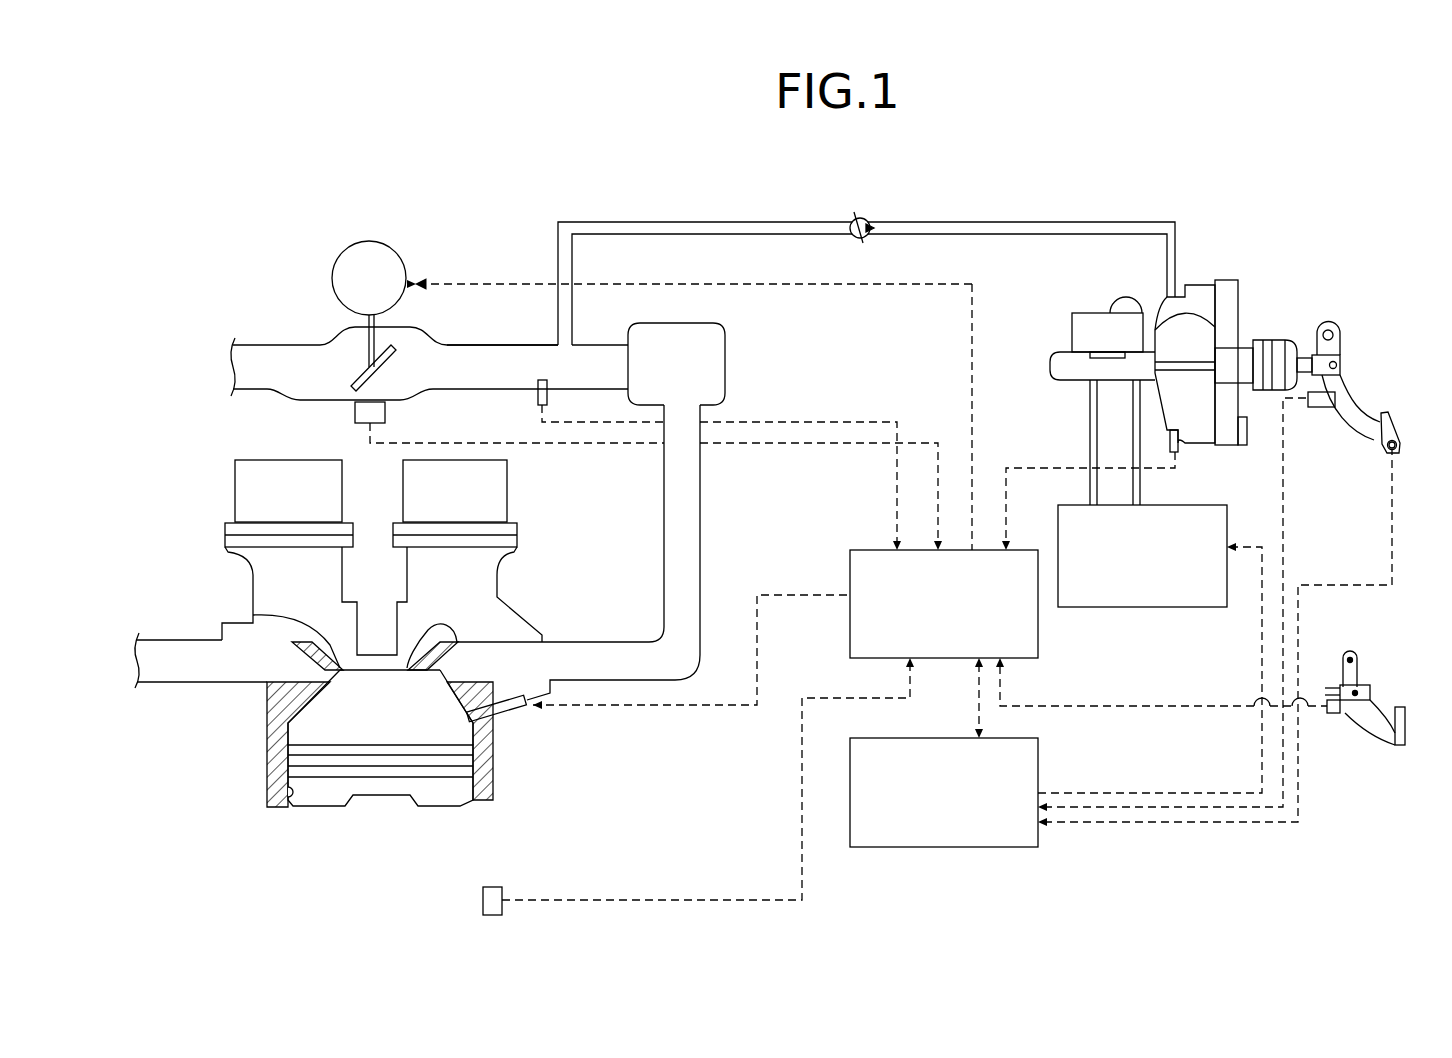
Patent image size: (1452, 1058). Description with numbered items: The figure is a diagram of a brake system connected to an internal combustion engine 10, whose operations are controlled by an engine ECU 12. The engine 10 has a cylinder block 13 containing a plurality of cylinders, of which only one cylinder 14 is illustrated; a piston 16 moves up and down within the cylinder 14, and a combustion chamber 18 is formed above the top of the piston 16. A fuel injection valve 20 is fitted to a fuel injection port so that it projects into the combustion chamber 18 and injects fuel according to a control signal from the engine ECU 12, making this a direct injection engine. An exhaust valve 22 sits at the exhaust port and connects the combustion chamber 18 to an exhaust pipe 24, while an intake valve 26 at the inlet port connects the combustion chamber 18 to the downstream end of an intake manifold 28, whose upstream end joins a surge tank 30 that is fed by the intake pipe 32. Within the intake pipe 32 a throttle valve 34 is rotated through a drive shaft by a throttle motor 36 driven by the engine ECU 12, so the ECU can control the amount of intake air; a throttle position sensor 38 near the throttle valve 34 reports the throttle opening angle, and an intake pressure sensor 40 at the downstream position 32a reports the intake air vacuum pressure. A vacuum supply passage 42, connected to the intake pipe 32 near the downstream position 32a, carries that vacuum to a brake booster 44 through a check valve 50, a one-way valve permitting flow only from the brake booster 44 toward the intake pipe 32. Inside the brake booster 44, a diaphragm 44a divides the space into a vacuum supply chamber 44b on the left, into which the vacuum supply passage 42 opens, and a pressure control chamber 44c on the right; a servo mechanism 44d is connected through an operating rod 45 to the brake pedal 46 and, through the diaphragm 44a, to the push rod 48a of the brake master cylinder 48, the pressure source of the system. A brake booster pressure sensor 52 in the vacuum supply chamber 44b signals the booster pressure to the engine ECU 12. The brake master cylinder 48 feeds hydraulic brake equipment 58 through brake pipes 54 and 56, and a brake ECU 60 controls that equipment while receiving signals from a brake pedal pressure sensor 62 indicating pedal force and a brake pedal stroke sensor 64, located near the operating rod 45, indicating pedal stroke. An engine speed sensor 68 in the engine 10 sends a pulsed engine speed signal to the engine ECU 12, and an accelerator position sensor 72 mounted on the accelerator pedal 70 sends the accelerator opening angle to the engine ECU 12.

The internal combustion engine 10 is at (398, 773).
The engine ECU 12 is at (850, 630).
The cylinder block 13 is at (277, 703).
The cylinder 14 is at (282, 795).
The piston 16 is at (322, 795).
The combustion chamber 18 is at (437, 725).
The fuel injection valve 20 is at (513, 712).
The exhaust valve 22 is at (253, 613).
The exhaust pipe 24 is at (172, 672).
The intake valve 26 is at (430, 663).
The intake manifold 28 is at (702, 585).
The surge tank 30 is at (717, 378).
The intake pipe 32 is at (255, 395).
The downstream position 32a is at (470, 343).
The throttle valve 34 is at (362, 373).
The throttle motor 36 is at (368, 262).
The throttle position sensor 38 is at (355, 415).
The intake pressure sensor 40 is at (538, 400).
The vacuum supply passage 42 is at (760, 222).
The brake booster 44 is at (1200, 307).
The diaphragm 44a is at (1210, 327).
The vacuum supply chamber 44b is at (1187, 298).
The pressure control chamber 44c is at (1230, 291).
The servo mechanism 44d is at (1240, 348).
The operating rod 45 is at (1307, 355).
The brake pedal 46 is at (1380, 410).
The brake master cylinder 48 is at (1053, 356).
The push rod 48a is at (1183, 366).
The check valve 50 is at (865, 218).
The brake booster pressure sensor 52 is at (1182, 448).
The brake pipe 54 is at (1132, 420).
The brake pipe 56 is at (1088, 400).
The hydraulic brake equipment 58 is at (1138, 608).
The brake ECU 60 is at (933, 848).
The brake pedal pressure sensor 62 is at (1405, 452).
The brake pedal stroke sensor 64 is at (1318, 408).
The engine speed sensor 68 is at (483, 900).
The accelerator pedal 70 is at (1405, 748).
The accelerator position sensor 72 is at (1317, 700).